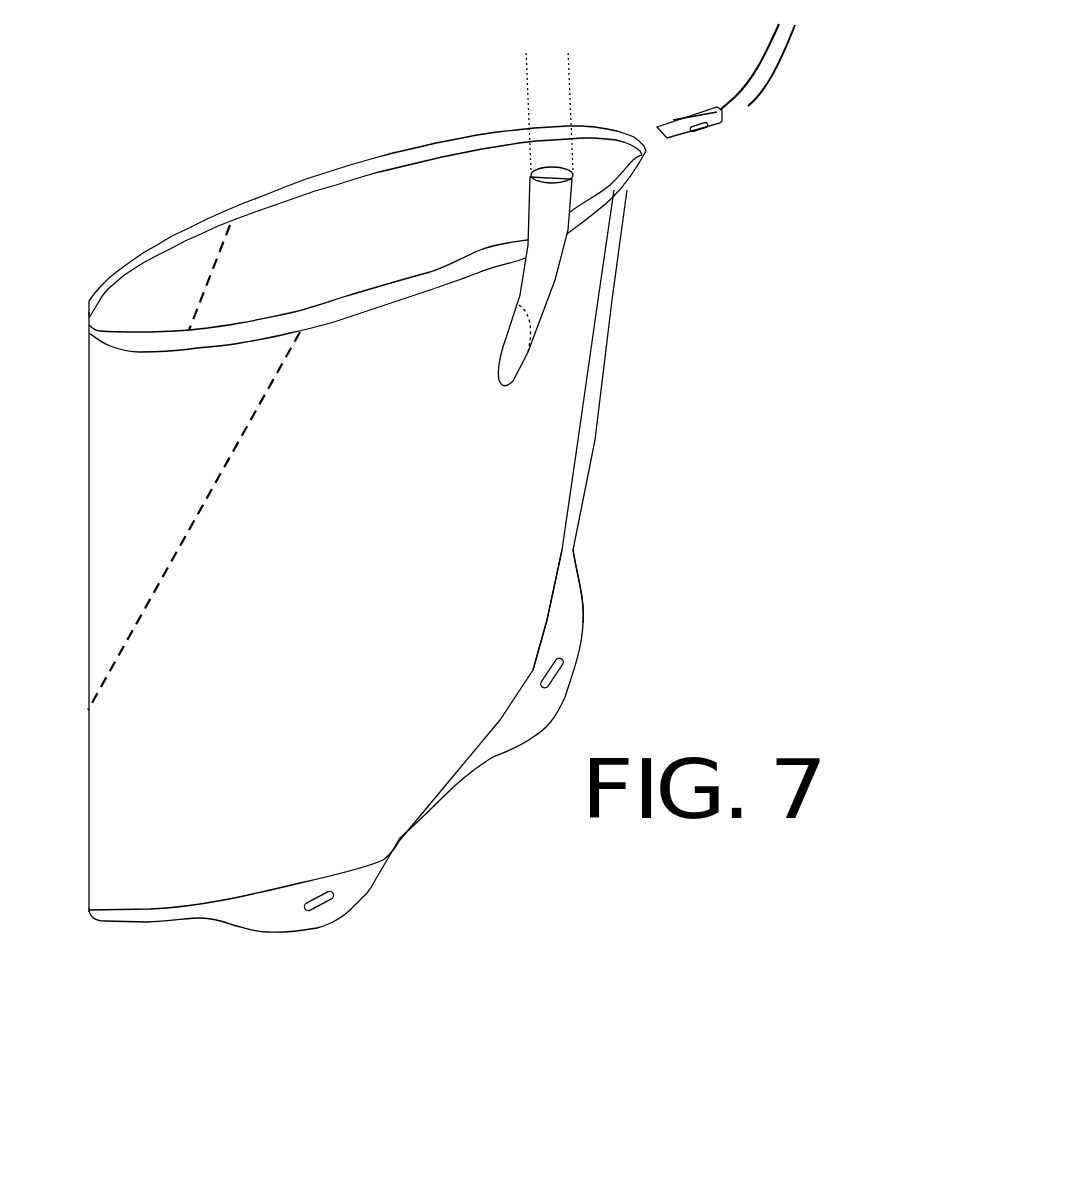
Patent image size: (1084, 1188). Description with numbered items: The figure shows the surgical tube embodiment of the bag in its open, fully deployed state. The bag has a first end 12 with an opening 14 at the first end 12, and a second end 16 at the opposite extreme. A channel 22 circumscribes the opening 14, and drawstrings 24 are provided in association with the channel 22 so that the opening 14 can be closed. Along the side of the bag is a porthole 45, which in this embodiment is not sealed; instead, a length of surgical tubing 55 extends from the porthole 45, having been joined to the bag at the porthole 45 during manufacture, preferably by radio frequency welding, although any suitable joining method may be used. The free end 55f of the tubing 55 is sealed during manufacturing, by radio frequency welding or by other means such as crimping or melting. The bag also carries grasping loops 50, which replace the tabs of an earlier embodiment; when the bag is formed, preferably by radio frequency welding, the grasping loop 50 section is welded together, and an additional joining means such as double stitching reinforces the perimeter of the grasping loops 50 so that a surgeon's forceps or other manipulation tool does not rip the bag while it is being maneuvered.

The first end 12 is at (160, 225).
The opening 14 is at (357, 240).
The second end 16 is at (140, 940).
The channel 22 is at (412, 148).
The drawstrings 24 is at (747, 107).
The porthole 45 is at (515, 379).
The grasping loops 50 is at (545, 683).
The surgical tubing 55 is at (540, 276).
The free end 55f is at (583, 63).